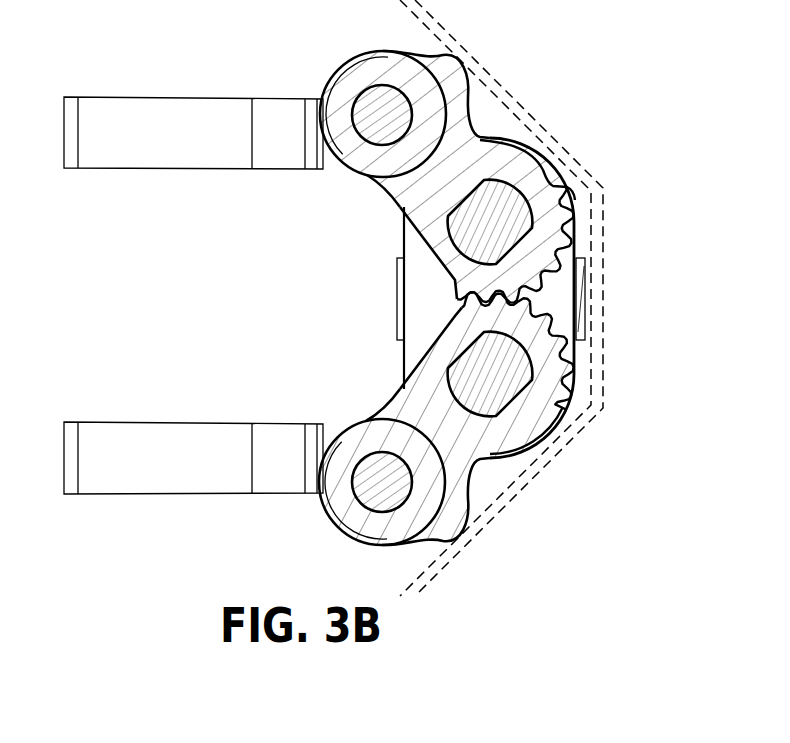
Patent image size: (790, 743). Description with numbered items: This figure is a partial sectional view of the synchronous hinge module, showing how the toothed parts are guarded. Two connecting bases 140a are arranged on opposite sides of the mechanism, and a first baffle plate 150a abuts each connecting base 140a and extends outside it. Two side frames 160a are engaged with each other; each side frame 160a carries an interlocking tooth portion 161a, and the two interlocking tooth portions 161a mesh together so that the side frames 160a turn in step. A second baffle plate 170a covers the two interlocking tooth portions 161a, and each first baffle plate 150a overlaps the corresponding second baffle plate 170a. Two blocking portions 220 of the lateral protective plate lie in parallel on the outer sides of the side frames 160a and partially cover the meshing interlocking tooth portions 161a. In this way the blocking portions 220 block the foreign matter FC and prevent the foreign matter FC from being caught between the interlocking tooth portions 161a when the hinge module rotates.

The connecting base 140a is at (190, 117).
The first baffle plate 150a is at (443, 70).
The side frame 160a is at (433, 133).
The interlocking tooth portion 161a is at (567, 247).
The second baffle plate 170a is at (547, 168).
The blocking portion 220 is at (396, 294).
The foreign matter FC is at (597, 322).